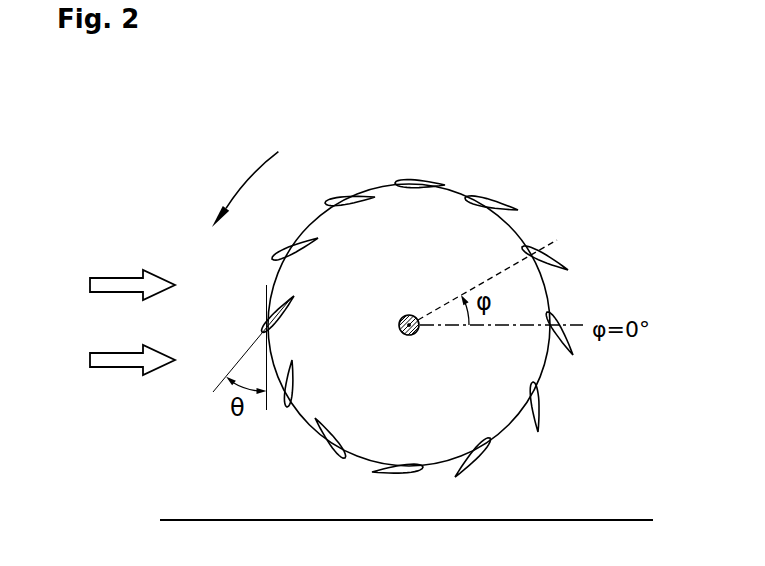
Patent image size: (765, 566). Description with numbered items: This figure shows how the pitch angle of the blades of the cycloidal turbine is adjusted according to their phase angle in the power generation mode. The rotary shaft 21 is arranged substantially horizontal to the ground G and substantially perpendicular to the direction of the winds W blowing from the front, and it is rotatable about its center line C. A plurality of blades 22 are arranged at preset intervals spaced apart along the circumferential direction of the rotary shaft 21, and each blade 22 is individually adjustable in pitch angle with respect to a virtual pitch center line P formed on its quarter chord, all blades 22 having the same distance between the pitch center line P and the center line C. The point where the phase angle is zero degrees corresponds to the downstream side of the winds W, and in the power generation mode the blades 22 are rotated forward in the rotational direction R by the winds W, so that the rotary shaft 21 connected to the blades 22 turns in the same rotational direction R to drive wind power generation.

The rotary shaft 21 is at (399, 317).
The blade 22 is at (487, 197).
The pitch center line P is at (405, 180).
The rotary shaft center line C is at (410, 336).
The rotational direction R is at (231, 193).
The winds W is at (113, 277).
The ground G is at (181, 518).